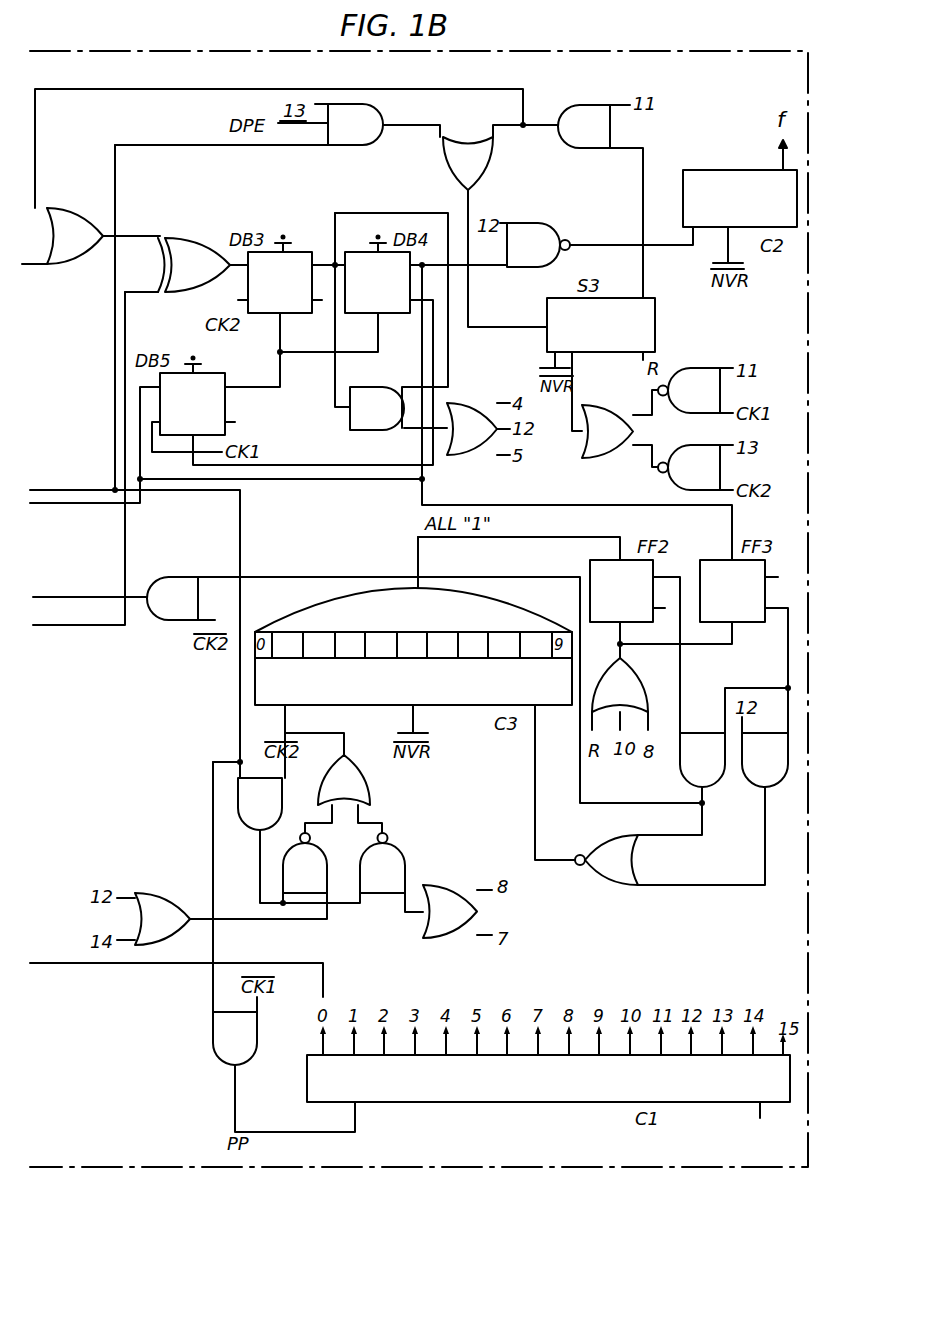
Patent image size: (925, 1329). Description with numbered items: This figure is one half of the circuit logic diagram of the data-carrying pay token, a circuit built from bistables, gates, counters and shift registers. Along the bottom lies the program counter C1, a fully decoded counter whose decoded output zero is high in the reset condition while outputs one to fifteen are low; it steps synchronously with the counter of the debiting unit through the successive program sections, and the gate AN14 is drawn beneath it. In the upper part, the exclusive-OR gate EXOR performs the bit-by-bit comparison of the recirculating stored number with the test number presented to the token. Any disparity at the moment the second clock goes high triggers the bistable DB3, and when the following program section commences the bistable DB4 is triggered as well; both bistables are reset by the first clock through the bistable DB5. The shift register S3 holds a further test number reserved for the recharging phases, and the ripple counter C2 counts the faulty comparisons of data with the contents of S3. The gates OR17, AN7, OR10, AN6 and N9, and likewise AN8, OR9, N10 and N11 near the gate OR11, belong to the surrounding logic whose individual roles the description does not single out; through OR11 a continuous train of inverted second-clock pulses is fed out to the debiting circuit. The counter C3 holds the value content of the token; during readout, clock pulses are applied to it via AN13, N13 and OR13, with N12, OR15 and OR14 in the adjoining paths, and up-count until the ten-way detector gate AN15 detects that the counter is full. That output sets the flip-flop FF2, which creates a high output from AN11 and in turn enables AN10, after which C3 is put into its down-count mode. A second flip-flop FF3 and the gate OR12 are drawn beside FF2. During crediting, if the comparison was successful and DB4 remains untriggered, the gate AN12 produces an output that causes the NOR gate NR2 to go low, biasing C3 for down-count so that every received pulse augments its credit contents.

The OR gate 17 OR17 is at (75, 236).
The EX/OR gate EXOR is at (194, 265).
The AND gate 7 AN7 is at (355, 124).
The OR gate 10 OR10 is at (468, 163).
The AND gate 6 AN6 is at (584, 126).
The ripple counter C2 is at (740, 198).
The NAND gate 9 N9 is at (538, 245).
The bistable DB-3 DB3 is at (305, 296).
The bistable DB4 is at (403, 296).
The bistable DB-5 DB5 is at (192, 396).
The shift register S3 is at (601, 325).
The AND gate 8 AN8 is at (377, 408).
The OR gate 9 OR9 is at (472, 429).
The OR gate OR11 is at (607, 431).
The NAND gate 10 N10 is at (689, 390).
The NAND gate 11 N11 is at (689, 467).
The AND gate AN10 is at (172, 598).
The 10-way detector gate AN15 is at (413, 629).
The counter C3 is at (413, 681).
The flip-flop FF2 is at (621, 591).
The flip-flop FF3 is at (732, 591).
The OR gate 12 OR12 is at (620, 685).
The AND gate AN11 is at (702, 760).
The AND gate AN12 is at (765, 760).
The AND gate AN13 is at (260, 804).
The OR gate OR13 is at (344, 780).
The NAND gate 12 N12 is at (305, 863).
The NAND gate N13 is at (382, 863).
The OR gate 15 OR15 is at (162, 919).
The OR gate 14 OR14 is at (450, 911).
The NOR gate NR2 is at (606, 860).
The AND gate 14 AN14 is at (235, 1038).
The program counter C1 is at (548, 1078).